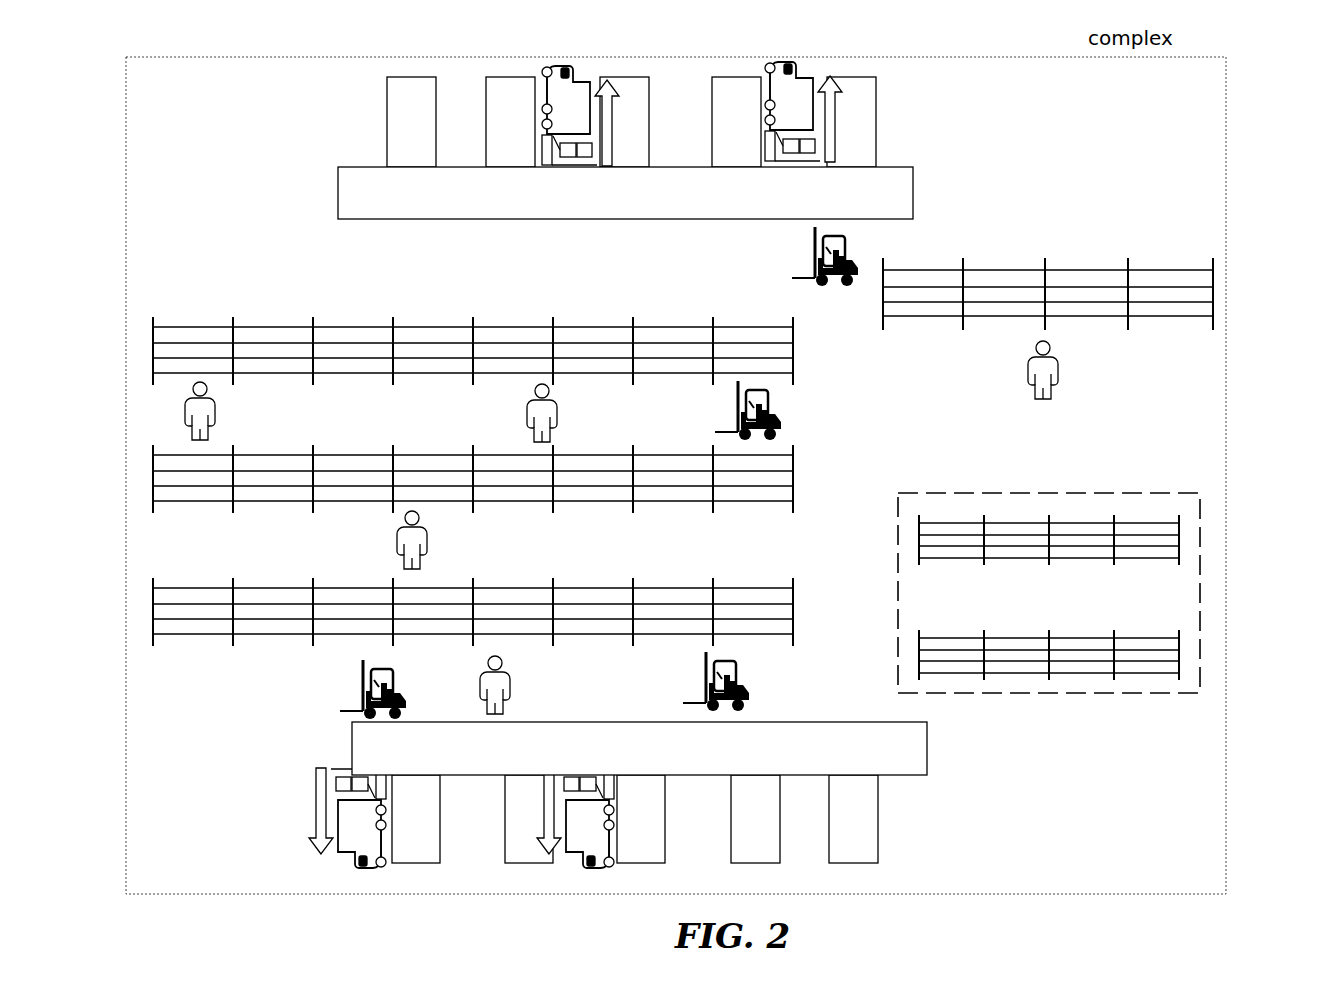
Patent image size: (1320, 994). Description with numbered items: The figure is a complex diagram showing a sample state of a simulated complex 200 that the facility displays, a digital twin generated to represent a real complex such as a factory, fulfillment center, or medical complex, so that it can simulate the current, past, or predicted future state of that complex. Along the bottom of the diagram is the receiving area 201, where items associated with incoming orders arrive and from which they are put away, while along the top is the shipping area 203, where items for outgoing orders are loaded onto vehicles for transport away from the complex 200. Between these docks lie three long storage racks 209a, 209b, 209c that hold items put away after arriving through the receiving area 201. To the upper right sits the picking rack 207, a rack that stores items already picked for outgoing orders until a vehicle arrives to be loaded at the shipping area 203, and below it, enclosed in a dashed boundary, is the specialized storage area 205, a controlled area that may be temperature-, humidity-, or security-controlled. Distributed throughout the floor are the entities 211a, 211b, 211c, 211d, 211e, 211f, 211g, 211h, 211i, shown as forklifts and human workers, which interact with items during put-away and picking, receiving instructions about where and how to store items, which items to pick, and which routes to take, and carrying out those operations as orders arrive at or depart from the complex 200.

The simulated complex 200 is at (1228, 62).
The receiving area 201 is at (929, 738).
The shipping area 203 is at (915, 178).
The specialized storage area 205 is at (1201, 585).
The picking rack 207 is at (1215, 280).
The storage rack 209a is at (797, 351).
The storage rack 209b is at (797, 474).
The storage rack 209c is at (797, 601).
The entity 211a is at (850, 260).
The entity 211b is at (1058, 368).
The entity 211c is at (782, 426).
The entity 211d is at (558, 417).
The entity 211e is at (215, 415).
The entity 211f is at (427, 542).
The entity 211g is at (510, 678).
The entity 211h is at (406, 700).
The entity 211i is at (745, 690).